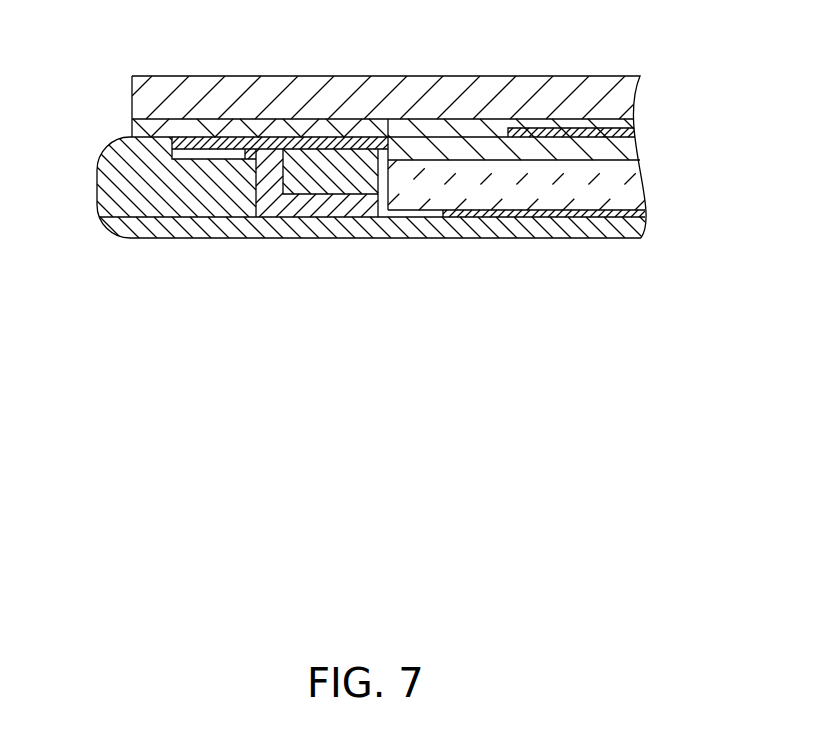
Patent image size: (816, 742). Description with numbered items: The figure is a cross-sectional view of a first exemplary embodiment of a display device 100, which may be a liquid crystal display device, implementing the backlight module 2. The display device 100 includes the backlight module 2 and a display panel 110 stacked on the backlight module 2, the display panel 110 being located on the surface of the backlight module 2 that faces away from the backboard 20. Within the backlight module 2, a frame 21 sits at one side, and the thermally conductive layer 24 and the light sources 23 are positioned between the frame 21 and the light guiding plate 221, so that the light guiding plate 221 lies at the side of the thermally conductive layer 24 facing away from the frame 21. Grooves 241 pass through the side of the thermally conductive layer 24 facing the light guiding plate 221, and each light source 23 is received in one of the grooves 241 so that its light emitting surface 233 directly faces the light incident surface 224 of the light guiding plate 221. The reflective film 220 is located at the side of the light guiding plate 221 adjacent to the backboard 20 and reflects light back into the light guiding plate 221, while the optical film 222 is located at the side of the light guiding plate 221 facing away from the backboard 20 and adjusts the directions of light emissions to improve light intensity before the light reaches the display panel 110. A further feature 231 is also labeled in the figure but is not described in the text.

The display device 100 is at (733, 82).
The display panel 110 is at (625, 100).
The backlight module 2 is at (668, 206).
The backboard 20 is at (445, 224).
The frame 21 is at (120, 175).
The reflective film 220 is at (602, 228).
The light guiding plate 221 is at (623, 192).
The optical film 222 is at (617, 144).
The light incident surface 224 is at (382, 215).
The light source 23 is at (330, 165).
The first electrode 231 is at (240, 140).
The light emitting surface 233 is at (381, 238).
The thermally conductive layer 24 is at (277, 200).
The groove 241 is at (331, 196).